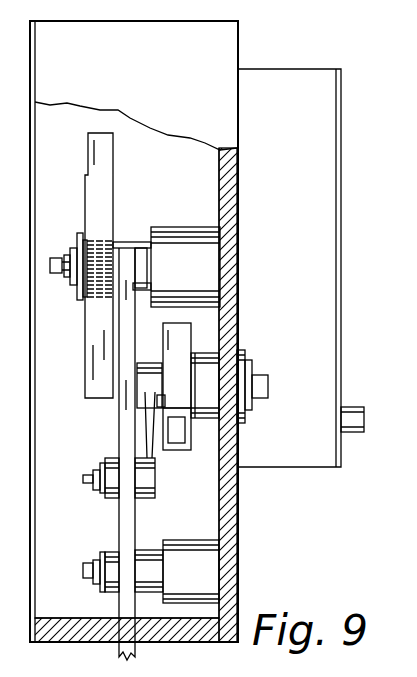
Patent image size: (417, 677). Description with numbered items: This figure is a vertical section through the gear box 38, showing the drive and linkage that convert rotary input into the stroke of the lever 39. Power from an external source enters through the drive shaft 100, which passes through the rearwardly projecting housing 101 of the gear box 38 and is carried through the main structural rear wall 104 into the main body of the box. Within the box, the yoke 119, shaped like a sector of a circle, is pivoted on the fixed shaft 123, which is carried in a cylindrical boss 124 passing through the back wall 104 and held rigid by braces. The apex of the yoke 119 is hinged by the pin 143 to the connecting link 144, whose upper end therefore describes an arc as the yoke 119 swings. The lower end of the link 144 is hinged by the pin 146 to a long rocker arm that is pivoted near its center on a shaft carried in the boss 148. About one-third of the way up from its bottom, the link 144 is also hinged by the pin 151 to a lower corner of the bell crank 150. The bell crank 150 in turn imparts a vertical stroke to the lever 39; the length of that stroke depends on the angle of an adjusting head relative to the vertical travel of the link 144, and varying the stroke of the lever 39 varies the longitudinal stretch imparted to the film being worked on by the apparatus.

The gear box 38 is at (224, 54).
The lever 39 is at (120, 650).
The drive shaft 100 is at (352, 420).
The rearwardly projecting housing 101 is at (340, 350).
The main structural rear wall 104 is at (232, 527).
The yoke 119 is at (92, 170).
The fixed shaft 123 is at (78, 243).
The cylindrical boss 124 is at (190, 238).
The pin 143 is at (78, 278).
The connecting link 144 is at (118, 530).
The pin 146 is at (98, 580).
The boss 148 is at (190, 558).
The bell crank 150 is at (150, 455).
The pin 151 is at (100, 470).